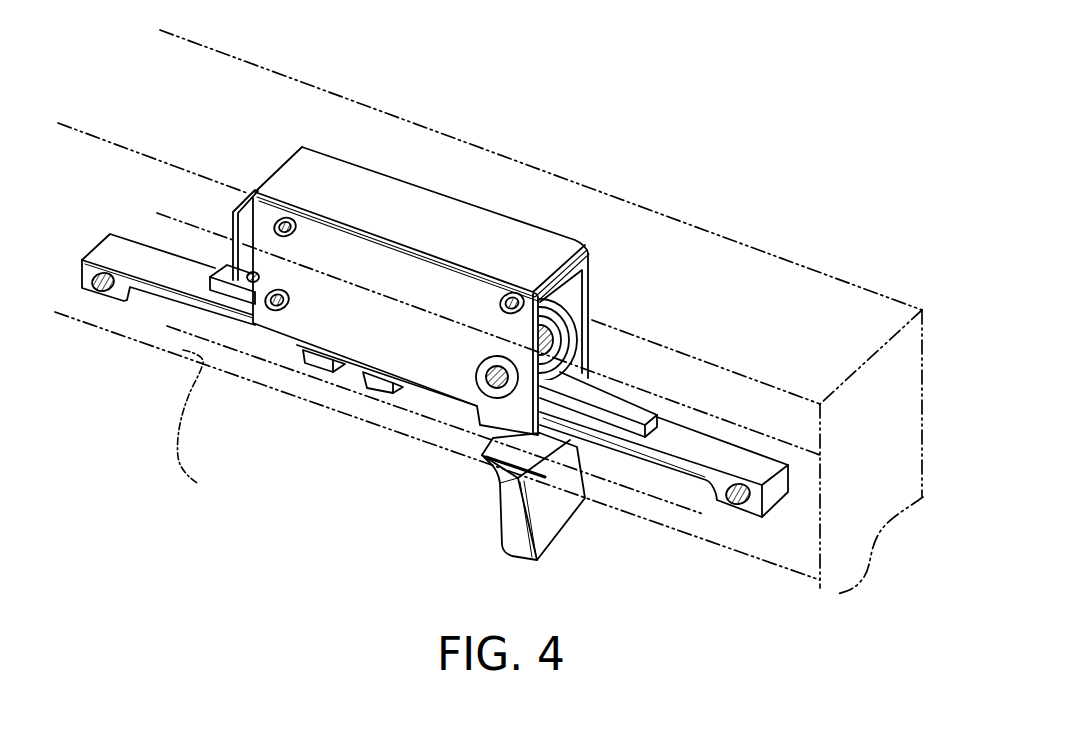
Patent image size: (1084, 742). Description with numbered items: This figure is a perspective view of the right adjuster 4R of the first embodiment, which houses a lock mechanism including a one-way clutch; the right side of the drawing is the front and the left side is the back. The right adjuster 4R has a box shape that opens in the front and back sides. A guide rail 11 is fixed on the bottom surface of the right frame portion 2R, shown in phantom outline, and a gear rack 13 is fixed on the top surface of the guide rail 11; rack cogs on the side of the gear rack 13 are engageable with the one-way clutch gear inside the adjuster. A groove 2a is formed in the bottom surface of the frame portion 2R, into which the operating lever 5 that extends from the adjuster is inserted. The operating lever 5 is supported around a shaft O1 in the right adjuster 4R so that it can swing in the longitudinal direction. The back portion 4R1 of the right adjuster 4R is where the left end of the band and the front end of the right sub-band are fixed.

The right frame portion 2R is at (732, 295).
The groove 2a is at (209, 427).
The right adjuster 4R is at (360, 197).
The back portion 4R1 is at (215, 260).
The guide rail 11 is at (738, 472).
The gear rack 13 is at (607, 403).
The operating lever 5 is at (512, 505).
The shaft O1 is at (593, 347).